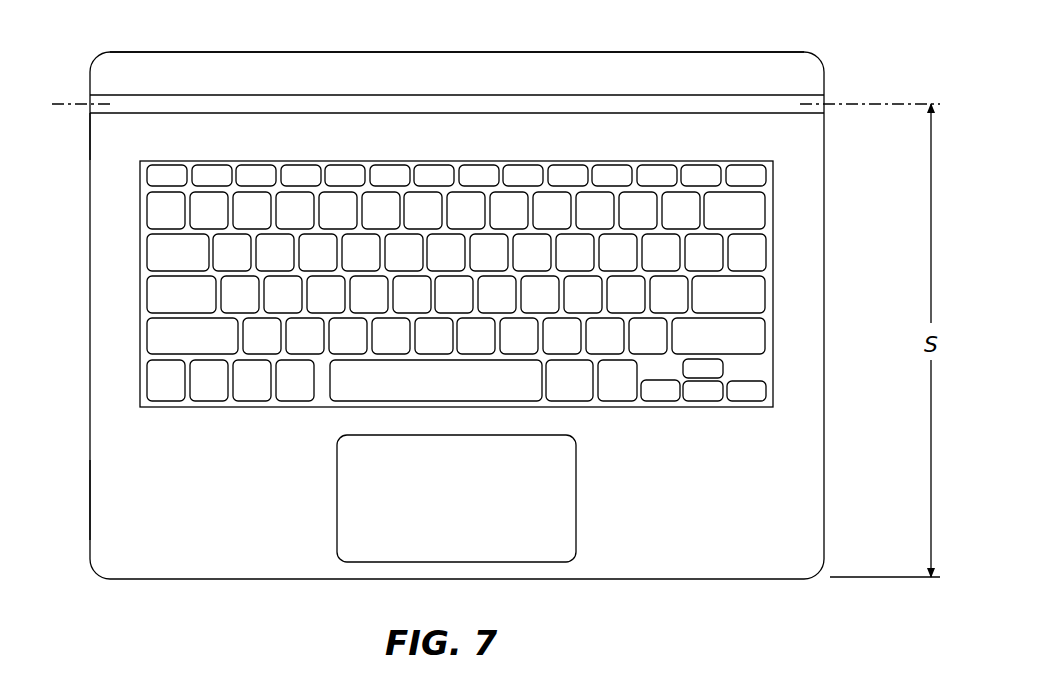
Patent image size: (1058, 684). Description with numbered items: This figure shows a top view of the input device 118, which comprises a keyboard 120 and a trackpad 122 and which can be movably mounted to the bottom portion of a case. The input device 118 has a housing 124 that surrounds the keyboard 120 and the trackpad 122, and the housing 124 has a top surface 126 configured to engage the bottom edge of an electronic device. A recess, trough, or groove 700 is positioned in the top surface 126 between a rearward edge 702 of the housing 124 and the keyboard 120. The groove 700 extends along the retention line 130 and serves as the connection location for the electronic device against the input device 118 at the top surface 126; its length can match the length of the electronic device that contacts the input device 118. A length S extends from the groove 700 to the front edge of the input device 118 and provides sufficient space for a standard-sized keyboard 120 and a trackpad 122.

The groove 700 is at (780, 103).
The rearward edge 702 is at (640, 52).
The retention line 130 is at (905, 103).
The input device 118 is at (826, 480).
The keyboard 120 is at (750, 293).
The trackpad 122 is at (418, 543).
The housing 124 is at (88, 520).
The top surface 126 is at (117, 138).